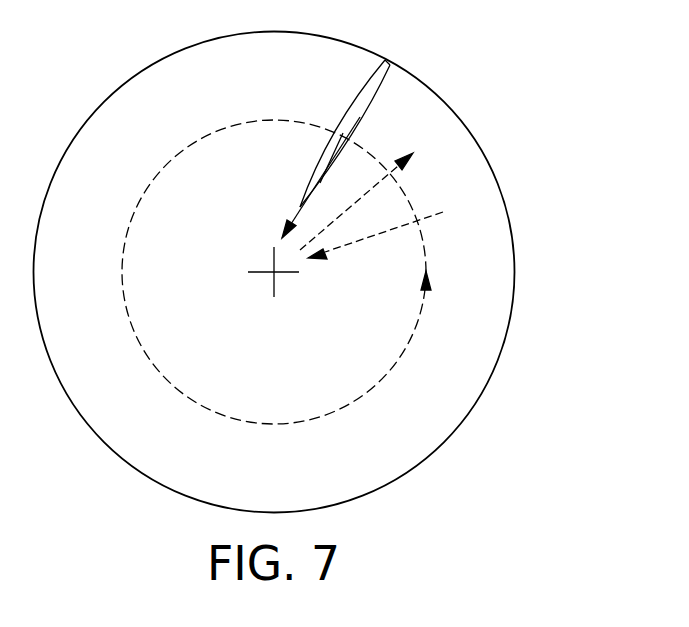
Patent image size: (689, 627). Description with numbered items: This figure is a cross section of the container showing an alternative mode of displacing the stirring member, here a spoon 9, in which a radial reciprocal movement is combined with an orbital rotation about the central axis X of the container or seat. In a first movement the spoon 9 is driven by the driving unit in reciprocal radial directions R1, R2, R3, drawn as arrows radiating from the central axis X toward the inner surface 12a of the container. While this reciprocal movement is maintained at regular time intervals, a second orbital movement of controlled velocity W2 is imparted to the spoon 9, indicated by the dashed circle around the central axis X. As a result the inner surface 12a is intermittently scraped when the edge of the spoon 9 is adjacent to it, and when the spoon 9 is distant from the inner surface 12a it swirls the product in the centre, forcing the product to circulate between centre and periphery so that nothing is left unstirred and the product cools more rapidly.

The spoon 9 is at (386, 78).
The inner surface of the container 12a is at (514, 268).
The reciprocal radial direction R1 is at (293, 216).
The reciprocal radial direction R2 is at (411, 163).
The reciprocal radial direction R3 is at (363, 239).
The orbital movement of controlled velocity W2 is at (276, 291).
The central axis of the container X is at (276, 275).